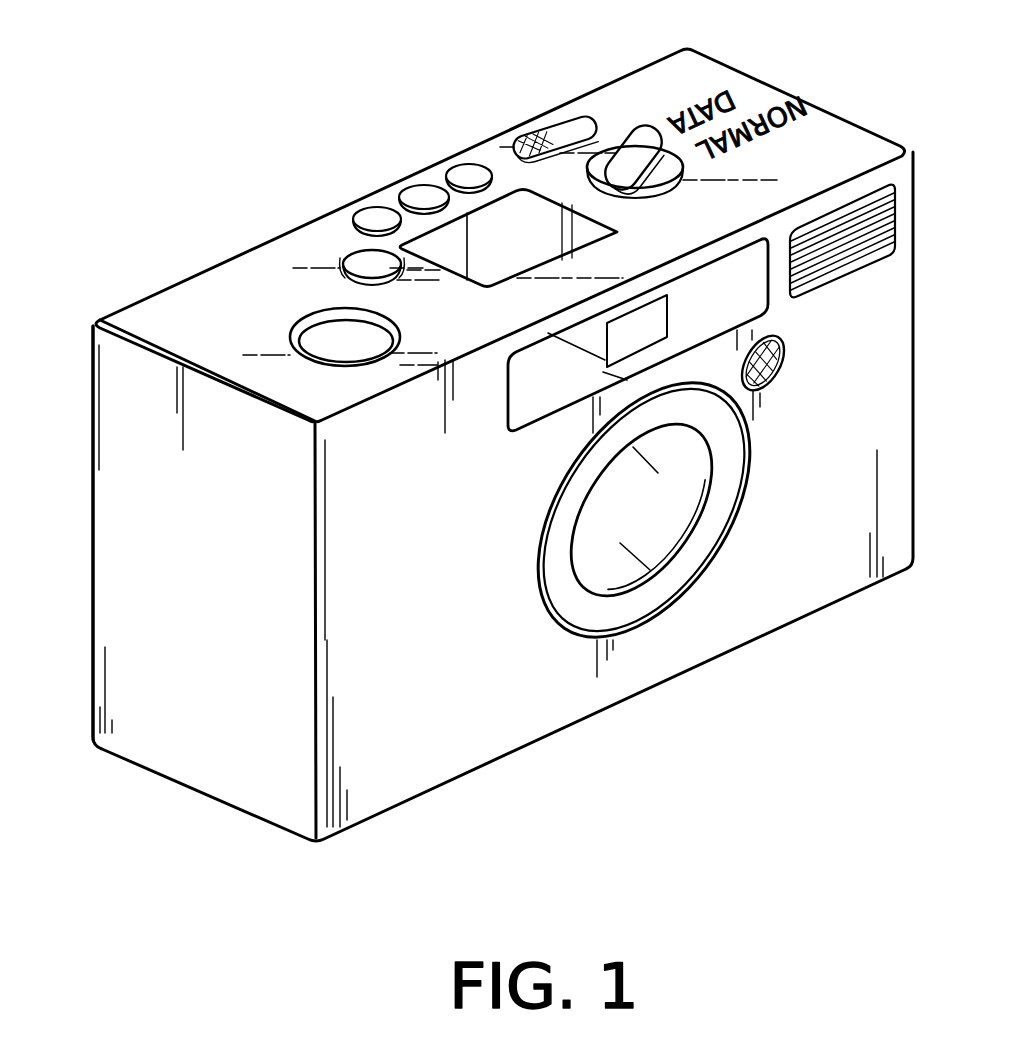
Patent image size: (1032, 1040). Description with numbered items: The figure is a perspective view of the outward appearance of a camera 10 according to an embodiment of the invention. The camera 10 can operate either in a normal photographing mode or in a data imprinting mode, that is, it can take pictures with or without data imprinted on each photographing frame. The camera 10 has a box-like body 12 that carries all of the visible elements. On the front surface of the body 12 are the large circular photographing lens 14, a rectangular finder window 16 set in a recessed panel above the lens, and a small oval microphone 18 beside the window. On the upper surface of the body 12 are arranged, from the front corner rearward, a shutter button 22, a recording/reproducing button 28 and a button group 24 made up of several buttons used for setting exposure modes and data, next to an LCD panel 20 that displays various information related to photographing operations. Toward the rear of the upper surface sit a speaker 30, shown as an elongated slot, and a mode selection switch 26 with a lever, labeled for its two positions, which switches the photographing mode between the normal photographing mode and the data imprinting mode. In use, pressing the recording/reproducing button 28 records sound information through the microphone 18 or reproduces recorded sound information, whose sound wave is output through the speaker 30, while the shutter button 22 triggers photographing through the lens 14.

The camera 10 is at (171, 276).
The body 12 is at (130, 477).
The photographing lens 14 is at (653, 543).
The finder window 16 is at (632, 327).
The microphone 18 is at (778, 372).
The LCD panel 20 is at (521, 190).
The shutter button 22 is at (323, 338).
The button group 24 is at (455, 143).
The mode selection switch 26 is at (645, 143).
The recording/reproducing button 28 is at (367, 260).
The speaker 30 is at (557, 127).